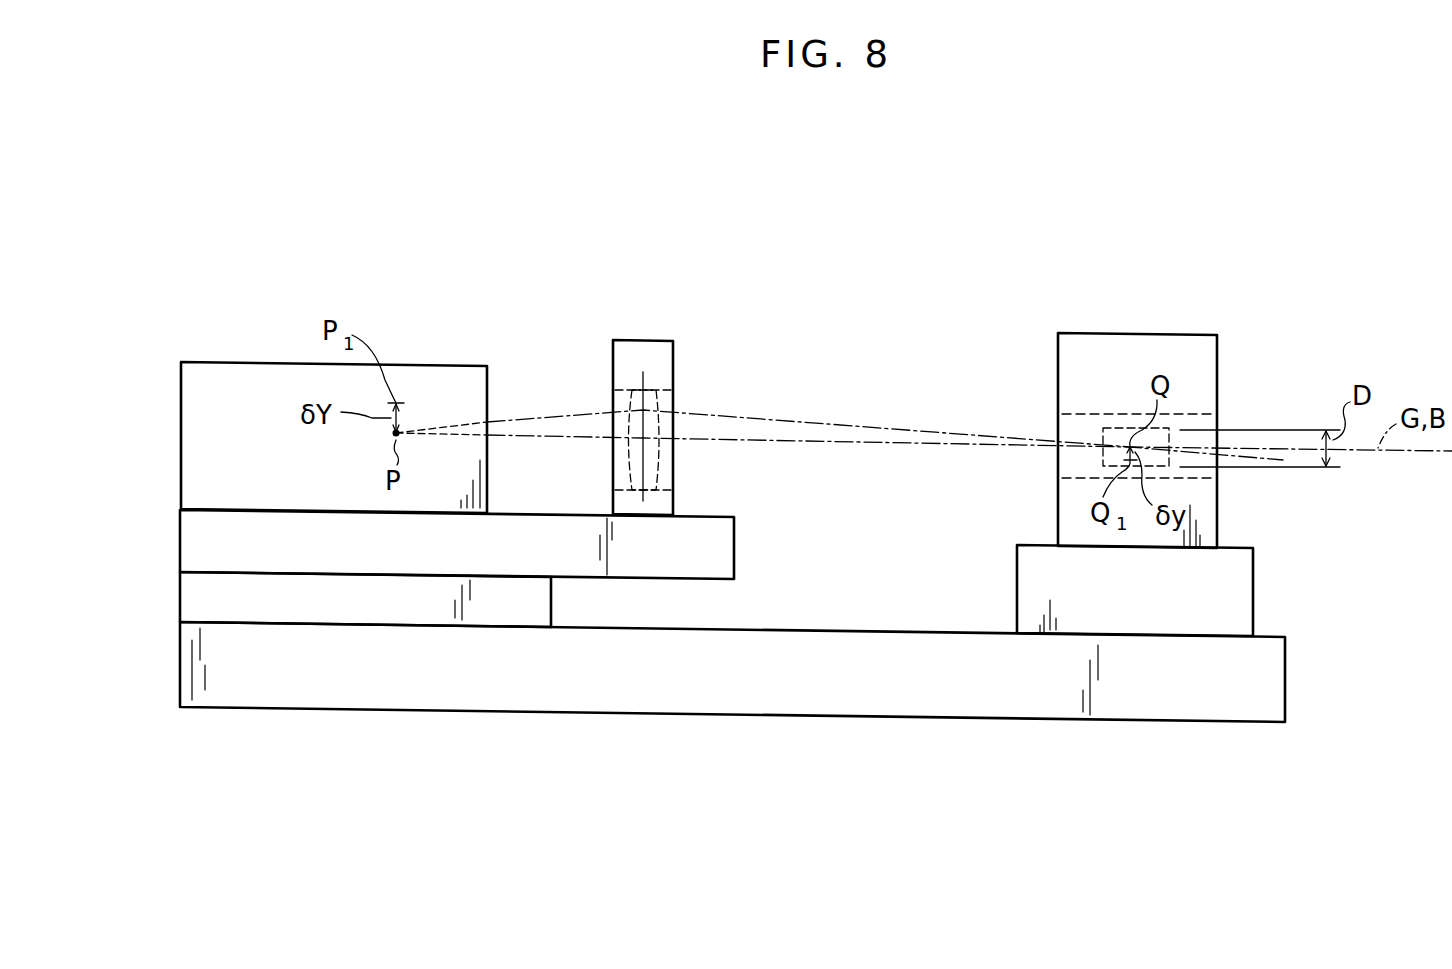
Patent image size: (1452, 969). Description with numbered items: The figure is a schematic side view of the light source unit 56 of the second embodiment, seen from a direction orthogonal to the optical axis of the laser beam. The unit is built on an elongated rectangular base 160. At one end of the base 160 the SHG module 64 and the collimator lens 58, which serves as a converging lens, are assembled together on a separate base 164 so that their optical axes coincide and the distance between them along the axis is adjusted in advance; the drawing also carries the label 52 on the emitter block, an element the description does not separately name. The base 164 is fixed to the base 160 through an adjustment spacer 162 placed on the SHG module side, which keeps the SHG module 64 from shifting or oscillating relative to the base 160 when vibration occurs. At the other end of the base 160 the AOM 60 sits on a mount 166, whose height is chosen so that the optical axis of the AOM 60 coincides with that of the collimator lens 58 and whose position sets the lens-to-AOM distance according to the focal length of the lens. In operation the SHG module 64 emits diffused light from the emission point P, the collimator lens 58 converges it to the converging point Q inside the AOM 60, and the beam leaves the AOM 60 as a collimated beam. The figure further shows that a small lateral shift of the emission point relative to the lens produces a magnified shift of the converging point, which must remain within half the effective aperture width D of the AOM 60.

The light source unit (52G, 52B) 52 is at (397, 357).
The SHG module 64 is at (403, 366).
The collimator lens 58 is at (655, 400).
The light source unit 56 is at (1140, 336).
The AOM 60 is at (1166, 340).
The base 160 is at (1275, 671).
The adjustment spacer 162 is at (520, 618).
The base 164 is at (713, 567).
The mount 166 is at (1240, 592).